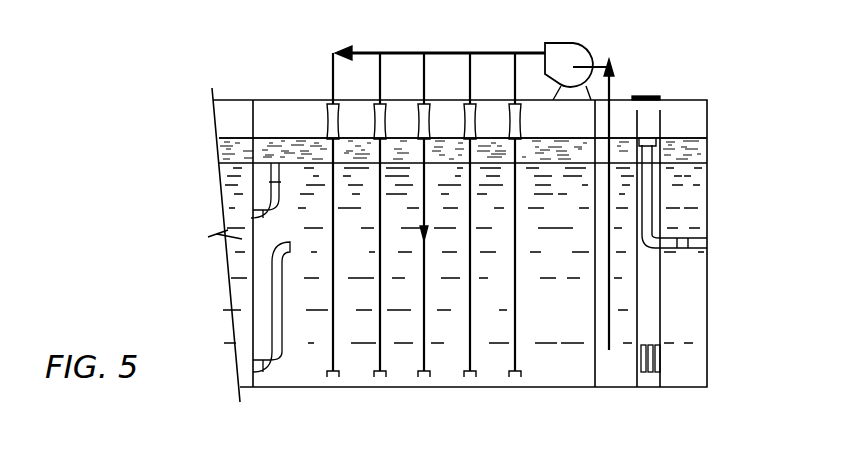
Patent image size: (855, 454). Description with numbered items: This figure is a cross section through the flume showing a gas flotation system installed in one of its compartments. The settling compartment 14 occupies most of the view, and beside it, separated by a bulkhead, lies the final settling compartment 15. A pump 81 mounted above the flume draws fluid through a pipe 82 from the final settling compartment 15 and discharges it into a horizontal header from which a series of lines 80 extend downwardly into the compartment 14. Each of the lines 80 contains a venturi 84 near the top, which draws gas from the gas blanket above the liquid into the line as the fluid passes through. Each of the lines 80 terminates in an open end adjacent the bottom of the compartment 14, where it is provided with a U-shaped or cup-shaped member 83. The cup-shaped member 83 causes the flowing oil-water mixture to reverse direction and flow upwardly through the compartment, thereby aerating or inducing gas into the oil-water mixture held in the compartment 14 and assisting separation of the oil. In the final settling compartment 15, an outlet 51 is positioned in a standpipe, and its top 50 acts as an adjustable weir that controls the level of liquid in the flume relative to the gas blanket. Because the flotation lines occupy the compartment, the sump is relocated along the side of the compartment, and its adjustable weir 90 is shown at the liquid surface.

The final settling compartment 14 is at (560, 331).
The final settling compartment 15 is at (694, 332).
The top of outlet 50 is at (653, 196).
The outlet 51 is at (684, 250).
The lines 80 is at (378, 65).
The pump 81 is at (585, 48).
The pipe 82 is at (612, 83).
The cup-shaped member 83 is at (380, 380).
The venturi 84 is at (372, 118).
The adjustable weir 90 is at (554, 129).